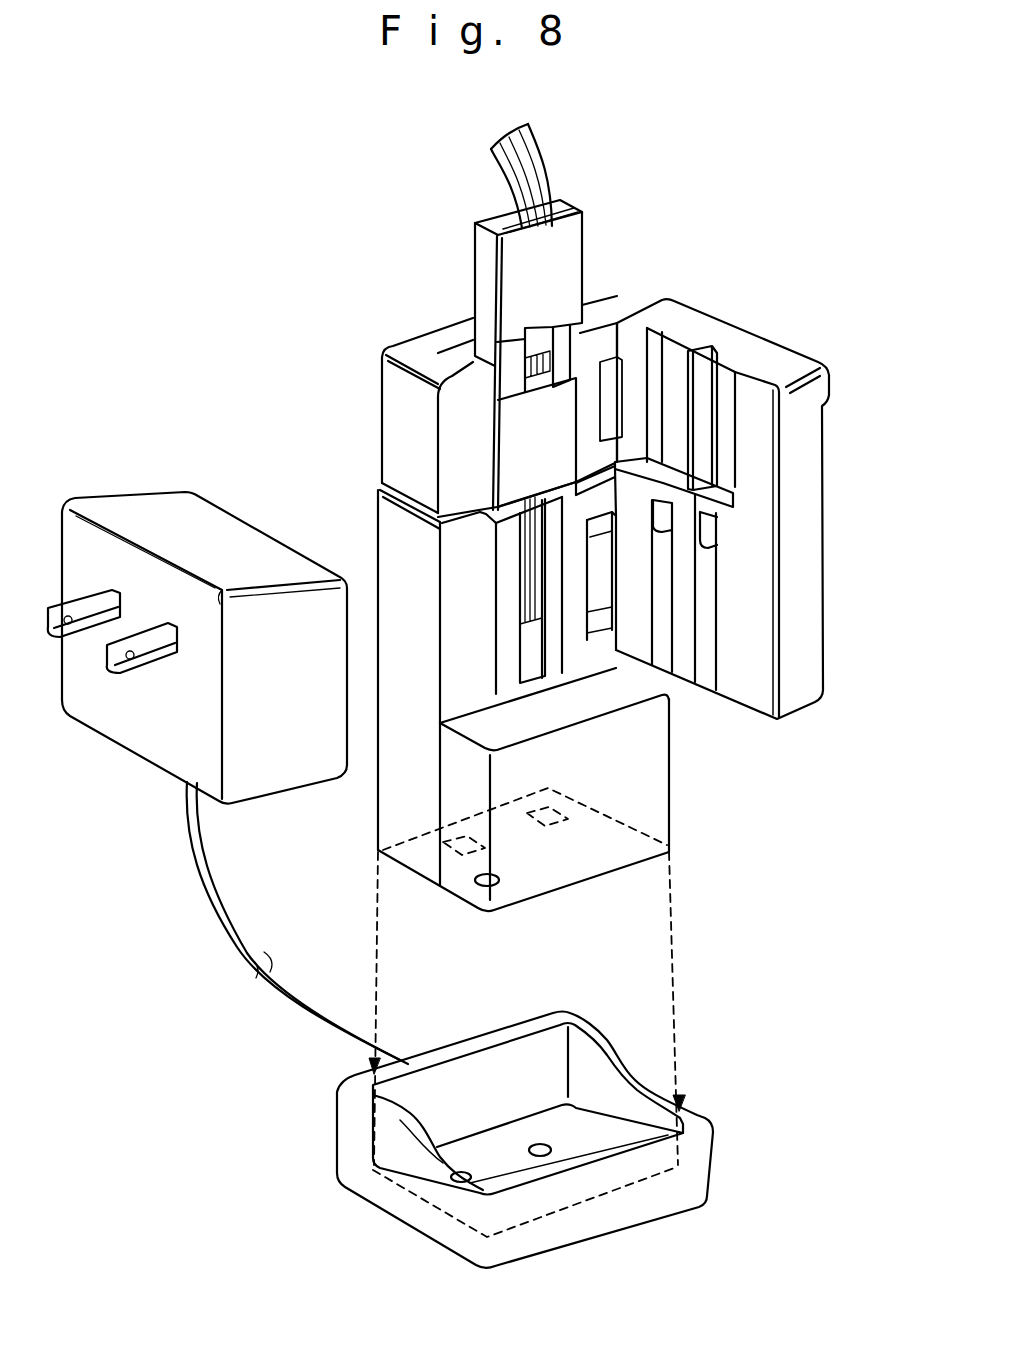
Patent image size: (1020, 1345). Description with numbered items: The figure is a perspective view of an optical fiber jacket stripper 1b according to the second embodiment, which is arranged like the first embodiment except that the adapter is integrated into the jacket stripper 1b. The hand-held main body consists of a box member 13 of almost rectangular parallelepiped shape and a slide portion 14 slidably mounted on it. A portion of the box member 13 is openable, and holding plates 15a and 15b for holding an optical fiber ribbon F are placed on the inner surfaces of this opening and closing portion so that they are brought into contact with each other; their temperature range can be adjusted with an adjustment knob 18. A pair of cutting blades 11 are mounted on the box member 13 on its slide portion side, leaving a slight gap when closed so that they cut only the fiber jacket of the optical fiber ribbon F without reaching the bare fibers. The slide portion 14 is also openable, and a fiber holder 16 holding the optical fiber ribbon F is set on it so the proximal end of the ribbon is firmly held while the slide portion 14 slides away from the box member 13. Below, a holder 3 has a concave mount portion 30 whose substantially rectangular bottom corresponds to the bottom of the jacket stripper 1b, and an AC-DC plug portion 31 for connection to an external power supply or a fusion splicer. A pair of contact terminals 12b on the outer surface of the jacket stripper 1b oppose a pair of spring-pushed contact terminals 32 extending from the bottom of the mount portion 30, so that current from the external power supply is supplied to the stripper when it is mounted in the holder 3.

The jacket stripper 1b is at (353, 319).
The holder 3 is at (698, 1068).
The cutting blades 11 is at (473, 506).
The contact terminals 12b is at (460, 847).
The box member 13 is at (647, 783).
The slide portion 14 is at (457, 416).
The holding plate 15a is at (505, 583).
The holding plate 15b is at (703, 640).
The fiber holder 16 is at (483, 280).
The adjustment knob 18 is at (487, 885).
The mount portion 30 is at (590, 1138).
The AC-DC plug portion 31 is at (160, 727).
The contact terminals 32 is at (540, 1144).
The optical fiber ribbon F is at (540, 182).